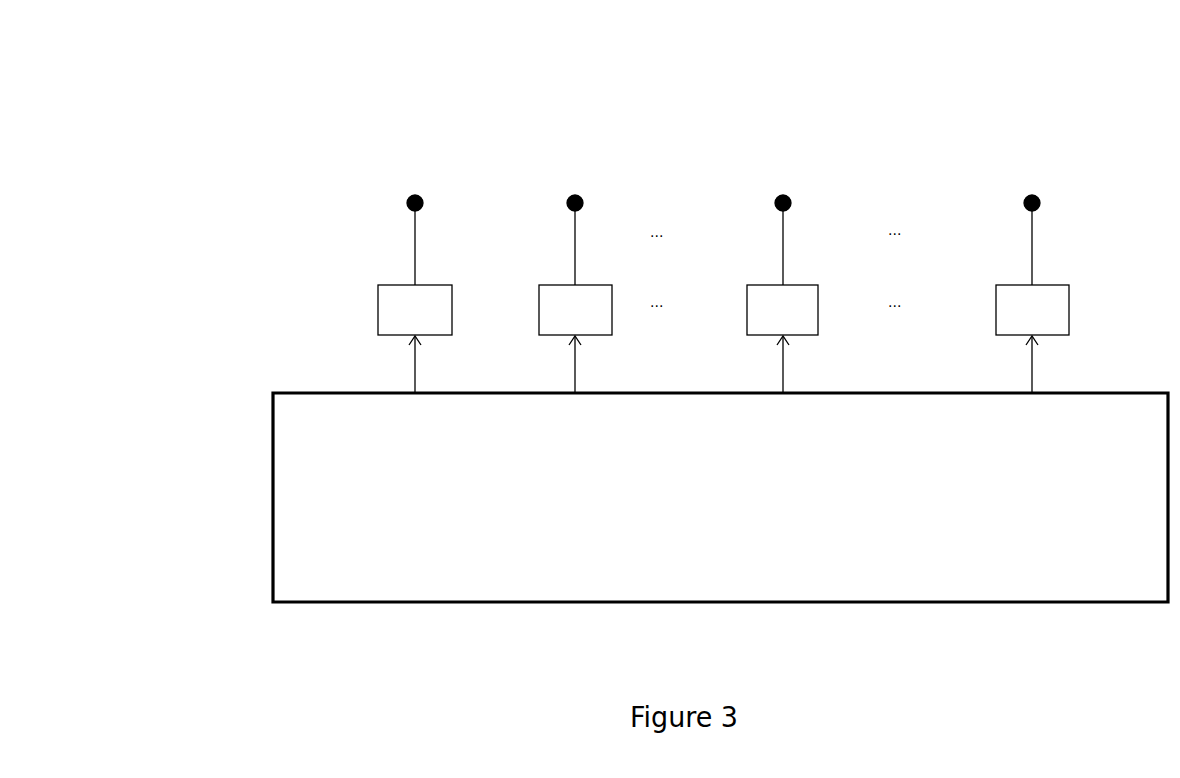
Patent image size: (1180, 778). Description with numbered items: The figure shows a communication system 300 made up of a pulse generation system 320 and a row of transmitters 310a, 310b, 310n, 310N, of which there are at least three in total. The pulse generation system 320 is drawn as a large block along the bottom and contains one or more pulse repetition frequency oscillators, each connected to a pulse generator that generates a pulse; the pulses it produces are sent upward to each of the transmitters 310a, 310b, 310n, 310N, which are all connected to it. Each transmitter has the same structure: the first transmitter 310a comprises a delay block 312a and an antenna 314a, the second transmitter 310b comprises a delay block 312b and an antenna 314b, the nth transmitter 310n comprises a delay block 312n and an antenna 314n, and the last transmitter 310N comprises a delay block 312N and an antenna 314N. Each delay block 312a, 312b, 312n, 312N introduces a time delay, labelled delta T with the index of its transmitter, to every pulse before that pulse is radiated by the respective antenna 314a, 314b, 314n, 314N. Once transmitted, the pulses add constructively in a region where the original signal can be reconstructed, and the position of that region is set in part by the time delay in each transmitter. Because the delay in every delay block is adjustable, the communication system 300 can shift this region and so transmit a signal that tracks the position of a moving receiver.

The communication system 300 is at (165, 118).
The pulse generation system 320 is at (720, 497).
The transmitter 310a is at (377, 243).
The transmitter 310b is at (553, 233).
The transmitter 310n is at (752, 230).
The transmitter 310N is at (1003, 233).
The delay block 312a is at (378, 317).
The delay block 312b is at (539, 310).
The delay block 312n is at (747, 310).
The delay block 312N is at (996, 310).
The antenna 314a is at (412, 193).
The antenna 314b is at (572, 195).
The antenna 314n is at (775, 192).
The antenna 314N is at (1028, 193).